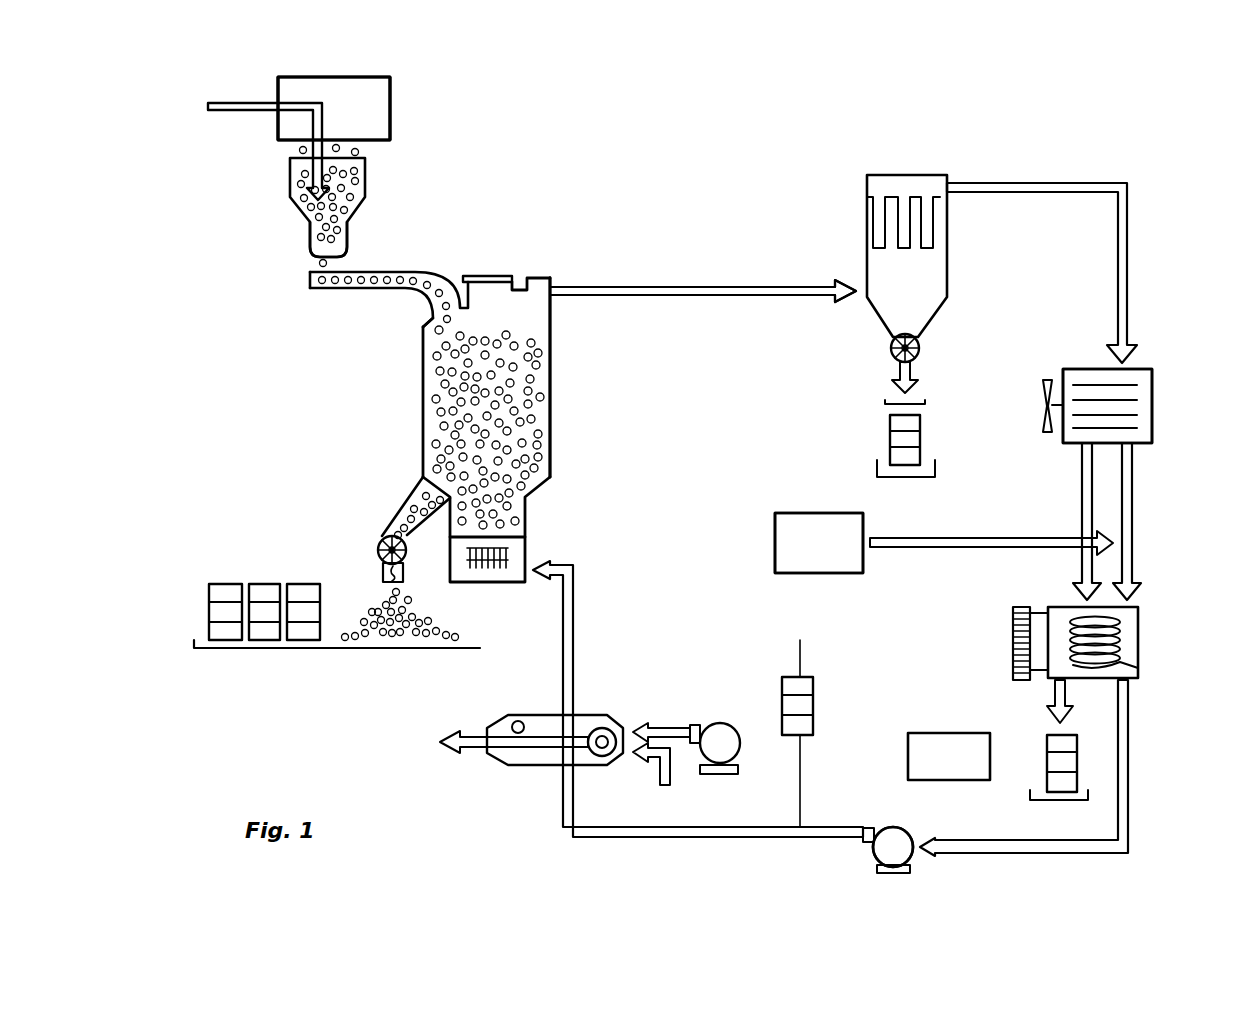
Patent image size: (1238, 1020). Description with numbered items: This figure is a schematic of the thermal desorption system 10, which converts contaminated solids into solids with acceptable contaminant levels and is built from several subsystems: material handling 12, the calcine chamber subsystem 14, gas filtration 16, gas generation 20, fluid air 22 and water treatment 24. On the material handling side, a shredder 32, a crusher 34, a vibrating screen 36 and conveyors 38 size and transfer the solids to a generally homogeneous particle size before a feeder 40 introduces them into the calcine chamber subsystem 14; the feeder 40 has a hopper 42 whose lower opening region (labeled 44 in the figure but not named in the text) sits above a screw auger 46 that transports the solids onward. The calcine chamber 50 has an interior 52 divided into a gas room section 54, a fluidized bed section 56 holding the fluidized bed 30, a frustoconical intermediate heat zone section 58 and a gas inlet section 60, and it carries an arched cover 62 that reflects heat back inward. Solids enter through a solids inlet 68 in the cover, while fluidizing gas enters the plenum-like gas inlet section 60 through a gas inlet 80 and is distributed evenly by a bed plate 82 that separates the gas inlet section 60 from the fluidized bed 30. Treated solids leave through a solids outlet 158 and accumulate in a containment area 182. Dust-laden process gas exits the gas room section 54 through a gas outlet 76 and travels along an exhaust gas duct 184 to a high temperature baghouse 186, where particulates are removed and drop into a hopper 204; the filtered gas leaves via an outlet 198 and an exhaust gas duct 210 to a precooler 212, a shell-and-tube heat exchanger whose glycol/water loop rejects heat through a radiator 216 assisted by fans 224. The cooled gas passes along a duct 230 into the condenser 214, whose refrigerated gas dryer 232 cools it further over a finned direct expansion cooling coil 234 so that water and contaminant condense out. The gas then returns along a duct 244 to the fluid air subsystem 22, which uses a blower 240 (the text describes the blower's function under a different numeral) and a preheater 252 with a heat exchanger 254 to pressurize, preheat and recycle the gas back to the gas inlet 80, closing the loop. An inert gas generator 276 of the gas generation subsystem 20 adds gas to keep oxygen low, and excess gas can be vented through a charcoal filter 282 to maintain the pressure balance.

The thermal desorption system 10 is at (738, 124).
The material handling subsystem 12 is at (380, 83).
The calcine chamber subsystem 14 is at (597, 430).
The gas filtration subsystem 16 is at (952, 299).
The gas generation subsystem 20 is at (802, 500).
The fluid air subsystem 22 is at (846, 857).
The water treatment subsystem 24 is at (958, 733).
The fluidized bed 30 is at (408, 562).
The shredder 32 is at (390, 112).
The crusher 34 is at (334, 108).
The vibrating screen 36 is at (334, 108).
The conveyors 38 is at (246, 108).
The feeder 40 is at (355, 182).
The hopper 42 is at (316, 180).
The hopper outlet 44 is at (345, 232).
The screw auger 46 is at (330, 292).
The calcine chamber 50 is at (530, 399).
The interior 52 is at (563, 318).
The gas room section 54 is at (545, 277).
The fluidized bed section 56 is at (545, 484).
The intermediate heat zone section 58 is at (553, 383).
The gas inlet section 60 is at (528, 557).
The arched cover 62 is at (506, 277).
The solids inlet 68 is at (428, 320).
The gas outlet 76 is at (555, 287).
The gas inlet 80 is at (537, 580).
The bed plate 82 is at (520, 548).
The solids outlet 158 is at (425, 479).
The containment area 182 is at (388, 642).
The exhaust gas duct 184 is at (745, 286).
The high temperature baghouse 186 is at (945, 262).
The outlet 198 is at (950, 196).
The hopper 204 is at (935, 320).
The exhaust gas duct 210 is at (1050, 183).
The precooler 212 is at (1150, 373).
The condenser 214 is at (1122, 676).
The radiator 216 is at (1150, 422).
The fans 224 is at (1043, 394).
The duct 230 is at (1133, 491).
The refrigerated gas dryer 232 is at (1140, 607).
The finned direct expansion cooling coil 234 is at (1130, 668).
The blower 240 is at (895, 827).
The duct 244 is at (1128, 805).
The preheater 252 is at (508, 752).
The heat exchanger 254 is at (548, 758).
The inert gas generator 276 is at (778, 565).
The charcoal filter 282 is at (822, 675).